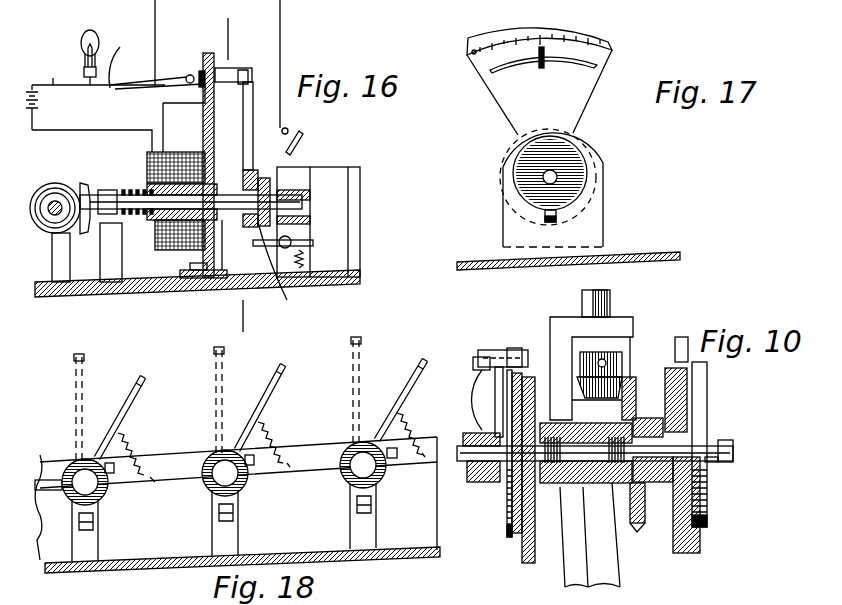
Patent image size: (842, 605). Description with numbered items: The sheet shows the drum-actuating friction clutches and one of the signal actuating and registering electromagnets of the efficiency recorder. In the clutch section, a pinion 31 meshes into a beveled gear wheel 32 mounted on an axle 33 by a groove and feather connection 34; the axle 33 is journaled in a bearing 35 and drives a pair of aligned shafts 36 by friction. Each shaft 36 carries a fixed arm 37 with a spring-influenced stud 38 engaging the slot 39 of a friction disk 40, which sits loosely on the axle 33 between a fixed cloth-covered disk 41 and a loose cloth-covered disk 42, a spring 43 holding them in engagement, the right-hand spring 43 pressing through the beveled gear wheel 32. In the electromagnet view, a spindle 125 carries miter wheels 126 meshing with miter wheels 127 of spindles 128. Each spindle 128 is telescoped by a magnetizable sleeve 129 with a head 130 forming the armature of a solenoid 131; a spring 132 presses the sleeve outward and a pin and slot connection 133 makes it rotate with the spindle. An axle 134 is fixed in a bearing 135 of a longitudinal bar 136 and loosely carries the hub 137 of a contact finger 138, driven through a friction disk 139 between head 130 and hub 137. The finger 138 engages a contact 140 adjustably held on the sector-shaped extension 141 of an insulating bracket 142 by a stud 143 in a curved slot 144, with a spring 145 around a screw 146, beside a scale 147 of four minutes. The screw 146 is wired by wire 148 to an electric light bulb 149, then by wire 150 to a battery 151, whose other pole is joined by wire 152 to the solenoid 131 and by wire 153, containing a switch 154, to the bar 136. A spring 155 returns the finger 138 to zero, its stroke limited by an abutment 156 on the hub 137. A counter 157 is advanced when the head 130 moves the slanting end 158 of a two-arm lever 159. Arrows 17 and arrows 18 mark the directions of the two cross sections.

In FIG. 16, the arrows 17 is at (212, 33).
In FIG. 16, the arrows 18 is at (250, 18).
In FIG. 16, the spindle 125 is at (55, 200).
In FIG. 16, the miter wheel 126 is at (38, 235).
In FIG. 16, the miter wheel 127 is at (85, 187).
In FIG. 16, the spindle 128 is at (138, 200).
In FIG. 17, the spindle 128 is at (557, 177).
In FIG. 16, the magnetizable sleeve 129 is at (226, 160).
In FIG. 16, the head 130 is at (240, 160).
In FIG. 17, the head 130 is at (577, 165).
In FIG. 16, the solenoid 131 is at (175, 152).
In FIG. 16, the spring 132 is at (138, 222).
In FIG. 16, the pin and slot connection 133 is at (173, 250).
In FIG. 16, the axle 134 is at (305, 168).
In FIG. 18, the axle 134 is at (92, 486).
In FIG. 16, the bearing 135 is at (340, 175).
In FIG. 16, the longitudinal bar 136 is at (330, 197).
In FIG. 18, the longitudinal bar 136 is at (186, 486).
In FIG. 16, the hub 137 is at (288, 168).
In FIG. 18, the hub 137 is at (82, 473).
In FIG. 16, the contact finger 138 is at (255, 66).
In FIG. 18, the contact finger 138 is at (140, 399).
In FIG. 16, the friction disk 139 is at (290, 270).
In FIG. 16, the contact 140 is at (248, 84).
In FIG. 17, the contact 140 is at (542, 68).
In FIG. 16, the sector-shaped extension 141 is at (163, 103).
In FIG. 17, the sector-shaped extension 141 is at (496, 93).
In FIG. 16, the bracket 142 is at (207, 293).
In FIG. 17, the bracket 142 is at (606, 222).
In FIG. 16, the stud 143 is at (190, 75).
In FIG. 17, the curved slot 144 is at (605, 63).
In FIG. 16, the spring 145 is at (148, 67).
In FIG. 16, the screw 146 is at (140, 97).
In FIG. 17, the scale 147 is at (490, 50).
In FIG. 16, the wire 148 is at (131, 56).
In FIG. 16, the electric light bulb 149 is at (98, 42).
In FIG. 16, the wire 150 is at (65, 71).
In FIG. 16, the battery 151 is at (92, 97).
In FIG. 16, the wire 152 is at (100, 132).
In FIG. 16, the wire 153 is at (282, 15).
In FIG. 16, the switch 154 is at (303, 129).
In FIG. 18, the spring 155 is at (140, 442).
In FIG. 18, the abutment 156 is at (150, 466).
In FIG. 16, the counter 157 is at (331, 222).
In FIG. 16, the slanting end 158 is at (240, 280).
In FIG. 16, the two-arm lever 159 is at (313, 246).
In FIG. 10, the pinion 31 is at (625, 372).
In FIG. 10, the beveled gear wheel 32 is at (640, 528).
In FIG. 10, the axle 33 is at (710, 460).
In FIG. 10, the groove and feather connection 34 is at (702, 420).
In FIG. 10, the bearing 35 is at (597, 412).
In FIG. 10, the shaft 36 is at (468, 482).
In FIG. 10, the fixed arm 37 is at (478, 383).
In FIG. 10, the spring-influenced stud 38 is at (527, 350).
In FIG. 10, the slot 39 is at (522, 360).
In FIG. 10, the friction disk 40 is at (528, 563).
In FIG. 10, the fixed cloth-covered disk 41 is at (507, 532).
In FIG. 10, the loose cloth-covered disk 42 is at (525, 532).
In FIG. 10, the spring 43 is at (573, 505).